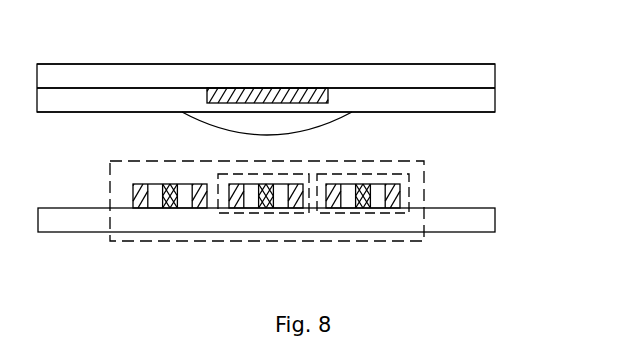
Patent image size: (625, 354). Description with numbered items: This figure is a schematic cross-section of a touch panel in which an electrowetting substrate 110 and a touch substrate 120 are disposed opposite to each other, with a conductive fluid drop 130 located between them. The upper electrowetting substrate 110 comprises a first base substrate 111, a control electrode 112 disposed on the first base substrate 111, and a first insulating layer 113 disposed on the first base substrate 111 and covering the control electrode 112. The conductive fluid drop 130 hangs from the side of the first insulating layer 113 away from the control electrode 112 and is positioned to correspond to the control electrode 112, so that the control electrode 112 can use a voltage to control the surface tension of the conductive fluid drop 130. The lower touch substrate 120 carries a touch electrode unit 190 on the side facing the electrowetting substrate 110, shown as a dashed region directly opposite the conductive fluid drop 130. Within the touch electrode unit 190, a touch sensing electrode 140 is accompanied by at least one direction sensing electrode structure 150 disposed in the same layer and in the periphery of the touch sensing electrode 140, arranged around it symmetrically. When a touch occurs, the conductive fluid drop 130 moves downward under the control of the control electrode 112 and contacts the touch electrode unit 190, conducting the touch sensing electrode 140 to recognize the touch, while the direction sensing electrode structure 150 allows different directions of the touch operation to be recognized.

The electrowetting substrate 110 is at (507, 62).
The first base substrate 111 is at (60, 78).
The control electrode 112 is at (293, 90).
The first insulating layer 113 is at (378, 102).
The touch substrate 120 is at (507, 183).
The conductive fluid drop 130 is at (210, 118).
The touch sensing electrode 140 is at (223, 213).
The direction sensing electrode structure 150 is at (322, 213).
The touch electrode unit 190 is at (125, 243).